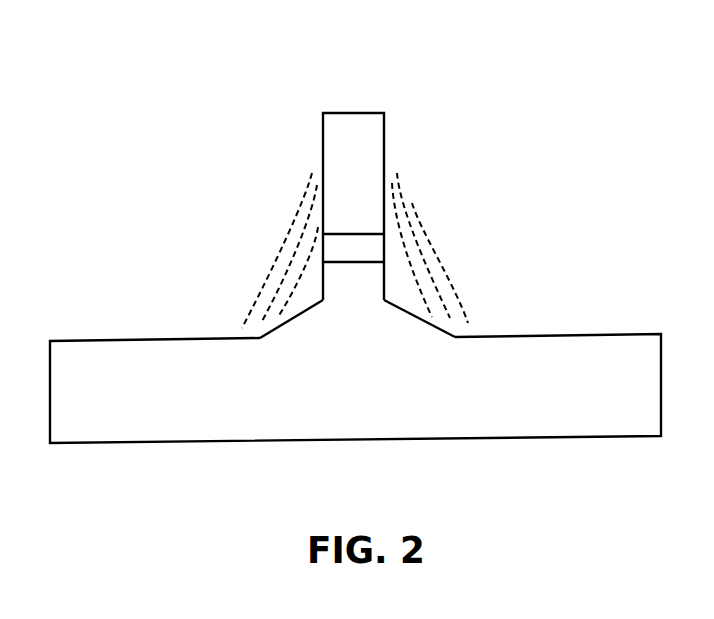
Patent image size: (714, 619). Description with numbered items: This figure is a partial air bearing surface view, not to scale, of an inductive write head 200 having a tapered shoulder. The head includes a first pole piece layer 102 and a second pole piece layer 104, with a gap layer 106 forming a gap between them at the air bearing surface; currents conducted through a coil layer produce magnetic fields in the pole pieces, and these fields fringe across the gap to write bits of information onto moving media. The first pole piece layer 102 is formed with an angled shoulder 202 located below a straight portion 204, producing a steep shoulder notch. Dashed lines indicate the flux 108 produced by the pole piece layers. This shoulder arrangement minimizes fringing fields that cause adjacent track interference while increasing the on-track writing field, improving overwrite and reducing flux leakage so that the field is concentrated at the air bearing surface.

The head 200 is at (232, 147).
The first pole piece layer 102 is at (324, 282).
The second pole piece layer 104 is at (385, 155).
The gap layer 106 is at (385, 249).
The flux 108 is at (413, 213).
The angled shoulder 202 is at (413, 315).
The straight portion 204 is at (385, 286).